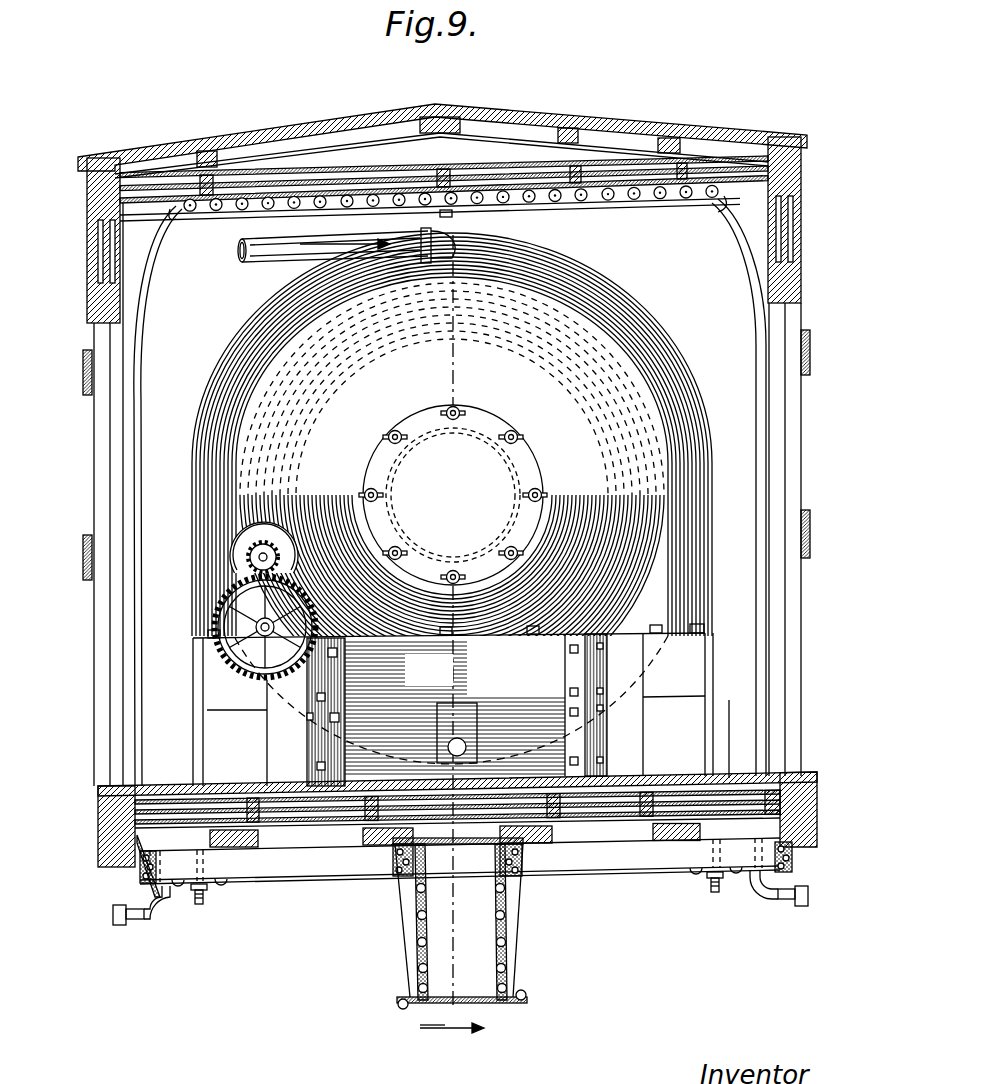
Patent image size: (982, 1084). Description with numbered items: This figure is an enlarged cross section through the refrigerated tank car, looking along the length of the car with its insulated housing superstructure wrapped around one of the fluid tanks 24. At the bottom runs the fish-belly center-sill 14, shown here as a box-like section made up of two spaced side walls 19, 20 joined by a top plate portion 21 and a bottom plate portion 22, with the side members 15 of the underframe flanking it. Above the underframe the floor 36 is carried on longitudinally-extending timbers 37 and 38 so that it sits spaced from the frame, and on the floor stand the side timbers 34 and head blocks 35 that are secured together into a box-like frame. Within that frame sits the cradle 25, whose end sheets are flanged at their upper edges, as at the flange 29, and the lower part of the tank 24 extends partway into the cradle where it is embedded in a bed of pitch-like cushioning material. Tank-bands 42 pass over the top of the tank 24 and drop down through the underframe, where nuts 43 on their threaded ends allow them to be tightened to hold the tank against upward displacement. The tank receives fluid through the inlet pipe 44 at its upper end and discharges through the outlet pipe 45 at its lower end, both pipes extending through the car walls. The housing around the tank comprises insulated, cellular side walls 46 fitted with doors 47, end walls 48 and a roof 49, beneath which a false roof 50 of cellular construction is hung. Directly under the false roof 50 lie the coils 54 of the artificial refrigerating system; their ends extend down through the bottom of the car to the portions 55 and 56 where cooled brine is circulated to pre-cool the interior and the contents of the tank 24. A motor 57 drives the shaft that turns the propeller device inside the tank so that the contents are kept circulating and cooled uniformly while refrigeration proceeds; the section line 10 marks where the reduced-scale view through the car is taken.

The section line 10 is at (452, 1041).
The center-sill 14 is at (461, 922).
The side members 15 is at (132, 880).
The side wall of center-sill 19 is at (412, 928).
The side wall of center-sill 20 is at (508, 927).
The top plate portion of center-sill 21 is at (467, 844).
The bottom plate portion of center-sill 22 is at (487, 1005).
The tank 24 is at (452, 621).
The cradle 25 is at (205, 640).
The flange 29 is at (486, 640).
The side timbers 34 is at (218, 695).
The head blocks 35 is at (455, 708).
The floor 36 is at (729, 778).
The longitudinally-extending timbers 37 is at (360, 836).
The longitudinally-extending timbers 38 is at (98, 805).
The tank-bands 42 is at (678, 372).
The nuts 43 is at (208, 890).
The inlet pipe 44 is at (265, 258).
The outlet pipe 45 is at (478, 742).
The side walls 46 is at (90, 255).
The doors 47 is at (95, 489).
The end walls 48 is at (681, 268).
The roof 49 is at (495, 120).
The false roof 50 is at (476, 168).
The coils 54 is at (430, 215).
The coil end portion 55 is at (777, 901).
The coil end portion 56 is at (274, 624).
The motor 57 is at (280, 556).